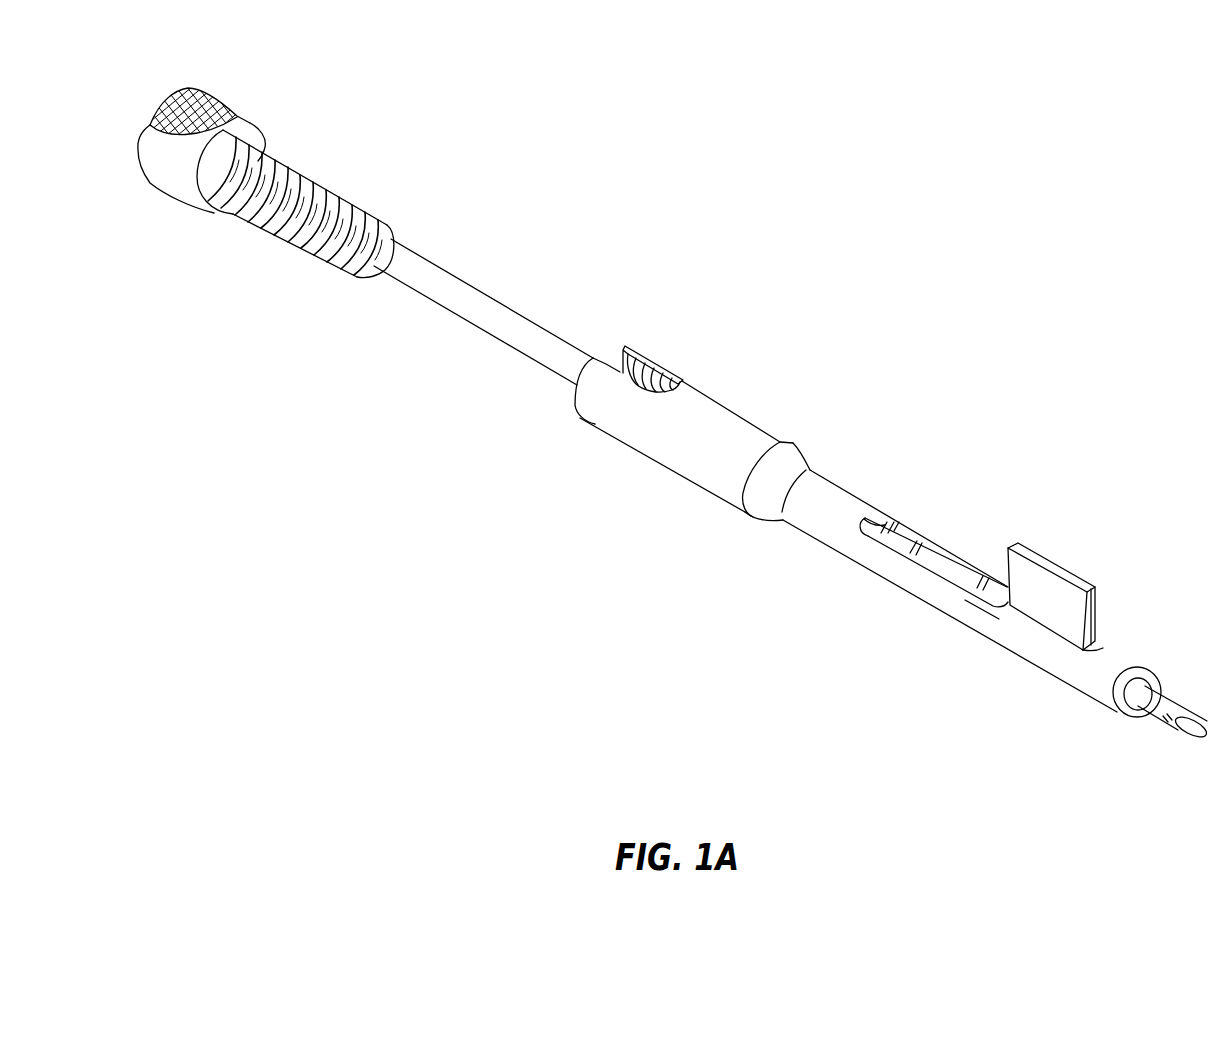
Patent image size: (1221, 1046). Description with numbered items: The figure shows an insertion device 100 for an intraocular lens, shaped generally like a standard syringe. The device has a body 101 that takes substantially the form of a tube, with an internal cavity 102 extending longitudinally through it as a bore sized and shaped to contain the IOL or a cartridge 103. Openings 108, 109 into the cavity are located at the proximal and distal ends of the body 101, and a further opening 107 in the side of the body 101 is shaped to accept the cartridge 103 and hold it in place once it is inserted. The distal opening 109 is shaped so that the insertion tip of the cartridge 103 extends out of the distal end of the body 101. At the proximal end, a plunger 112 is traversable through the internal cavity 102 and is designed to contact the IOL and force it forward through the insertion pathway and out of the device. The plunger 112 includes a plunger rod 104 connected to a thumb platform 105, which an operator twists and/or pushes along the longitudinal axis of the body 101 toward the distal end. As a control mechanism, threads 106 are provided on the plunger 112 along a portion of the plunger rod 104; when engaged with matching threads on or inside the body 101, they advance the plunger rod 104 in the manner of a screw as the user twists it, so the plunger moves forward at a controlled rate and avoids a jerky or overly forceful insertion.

The insertion device 100 is at (905, 277).
The body 101 is at (693, 452).
The internal cavity 102 is at (623, 364).
The cartridge 103 is at (1066, 569).
The plunger rod 104 is at (460, 307).
The thumb platform 105 is at (172, 173).
The threads 106 is at (302, 190).
The opening 107 is at (940, 558).
The proximal opening 108 is at (573, 402).
The distal opening 109 is at (1142, 702).
The plunger 112 is at (282, 141).